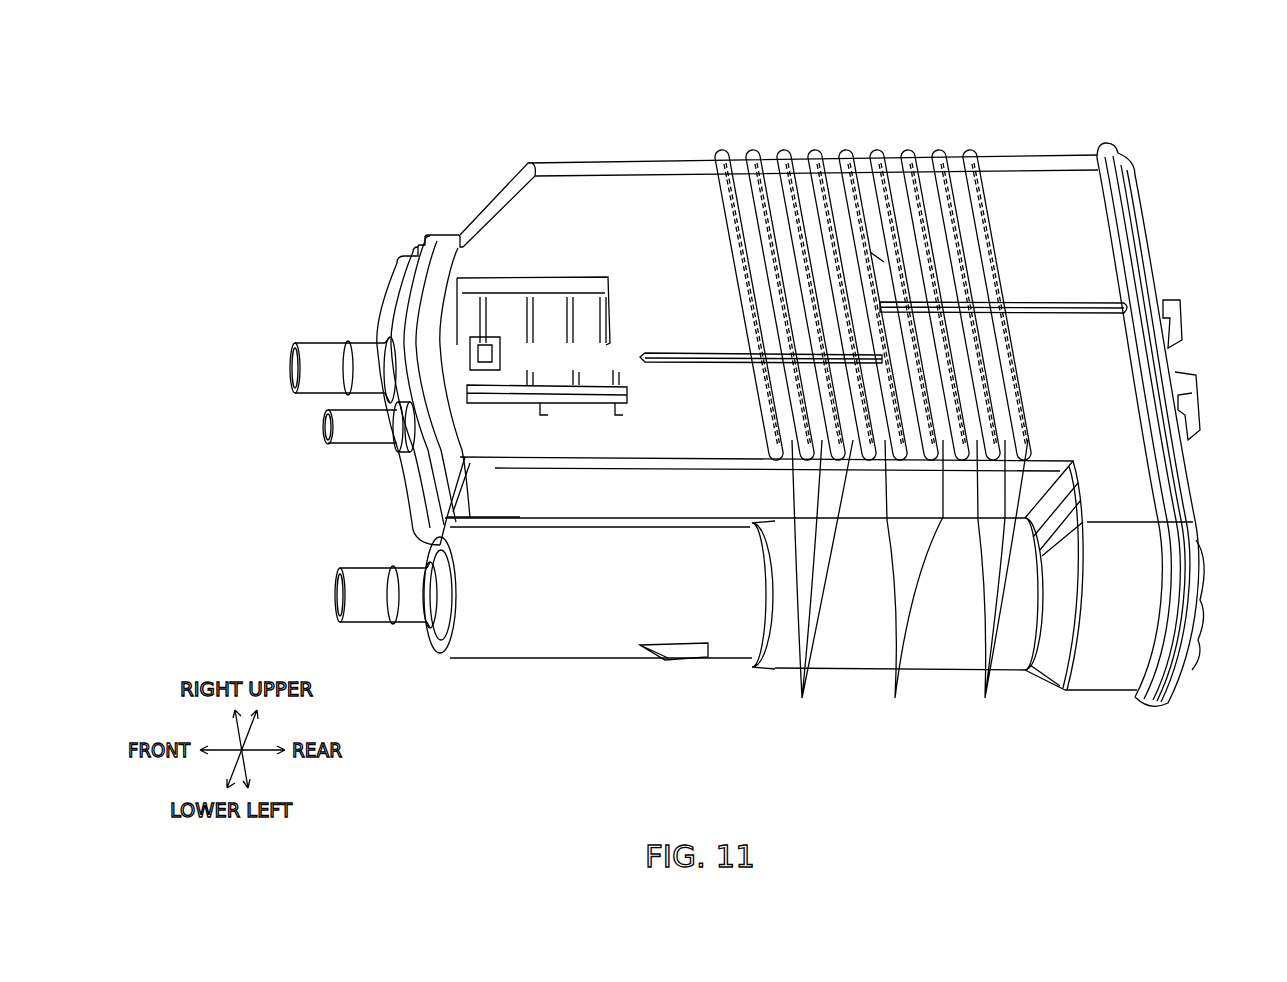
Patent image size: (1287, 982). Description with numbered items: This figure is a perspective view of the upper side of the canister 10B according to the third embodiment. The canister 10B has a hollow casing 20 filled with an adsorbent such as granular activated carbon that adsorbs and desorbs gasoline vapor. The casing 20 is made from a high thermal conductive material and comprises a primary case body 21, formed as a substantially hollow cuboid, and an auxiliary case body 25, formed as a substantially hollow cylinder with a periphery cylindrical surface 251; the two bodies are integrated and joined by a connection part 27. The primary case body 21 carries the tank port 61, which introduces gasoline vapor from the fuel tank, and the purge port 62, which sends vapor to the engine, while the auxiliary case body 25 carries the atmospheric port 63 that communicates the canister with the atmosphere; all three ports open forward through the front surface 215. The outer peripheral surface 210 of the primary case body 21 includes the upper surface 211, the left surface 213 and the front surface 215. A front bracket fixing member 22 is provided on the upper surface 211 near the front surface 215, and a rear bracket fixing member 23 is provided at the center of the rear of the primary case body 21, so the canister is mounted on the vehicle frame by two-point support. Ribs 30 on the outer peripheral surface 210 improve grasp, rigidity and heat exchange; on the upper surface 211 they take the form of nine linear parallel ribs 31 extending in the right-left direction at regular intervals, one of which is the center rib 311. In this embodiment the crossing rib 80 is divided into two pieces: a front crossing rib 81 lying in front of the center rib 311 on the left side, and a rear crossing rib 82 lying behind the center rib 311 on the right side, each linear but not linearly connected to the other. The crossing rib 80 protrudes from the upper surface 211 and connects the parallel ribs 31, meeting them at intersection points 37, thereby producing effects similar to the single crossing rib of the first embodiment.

The canister 10B is at (1176, 110).
The casing 20 is at (1082, 217).
The primary case body 21 is at (612, 195).
The front bracket fixing member 22 is at (507, 283).
The rear bracket fixing member 23 is at (1195, 394).
The auxiliary case body 25 is at (510, 640).
The connection part 27 is at (447, 522).
The ribs 30 is at (876, 251).
The parallel ribs 31 is at (965, 151).
The center rib 311 is at (877, 257).
The intersection points 37 is at (908, 585).
The tank port 61 is at (295, 368).
The purge port 62 is at (328, 426).
The atmospheric port 63 is at (340, 594).
The crossing rib 80 is at (959, 508).
The front crossing rib 81 is at (707, 360).
The rear crossing rib 82 is at (1093, 300).
The outer peripheral surface 210 is at (738, 416).
The upper surface 211 is at (1068, 195).
The left surface 213 is at (585, 493).
The front surface 215 is at (395, 308).
The periphery cylindrical surface 251 is at (857, 647).